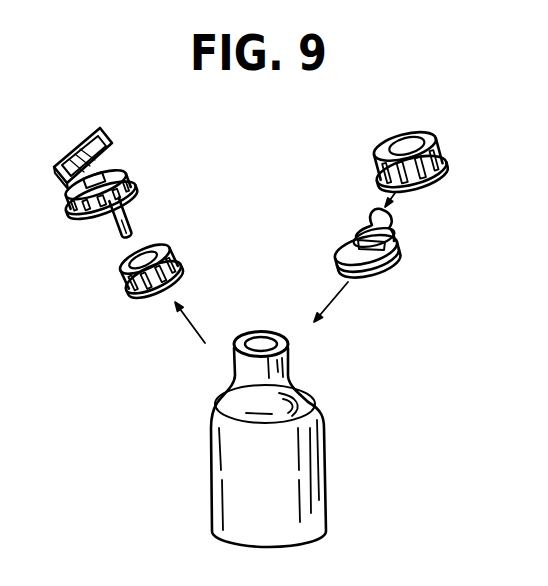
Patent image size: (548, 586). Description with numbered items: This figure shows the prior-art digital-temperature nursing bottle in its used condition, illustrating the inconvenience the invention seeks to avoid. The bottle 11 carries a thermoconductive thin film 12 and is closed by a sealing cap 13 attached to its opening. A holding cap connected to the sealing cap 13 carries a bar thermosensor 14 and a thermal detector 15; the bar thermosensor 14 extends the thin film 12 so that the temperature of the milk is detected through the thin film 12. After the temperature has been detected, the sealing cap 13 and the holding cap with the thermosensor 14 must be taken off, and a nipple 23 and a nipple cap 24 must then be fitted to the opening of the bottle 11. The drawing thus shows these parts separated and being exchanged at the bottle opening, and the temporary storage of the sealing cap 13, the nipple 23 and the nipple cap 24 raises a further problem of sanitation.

The bottle 11 is at (323, 448).
The thermoconductive thin film 12 is at (174, 260).
The sealing cap 13 is at (182, 266).
The bar thermosensor 14 is at (118, 232).
The thermal detector 15 is at (125, 203).
The nipple 23 is at (397, 262).
The nipple cap 24 is at (438, 171).